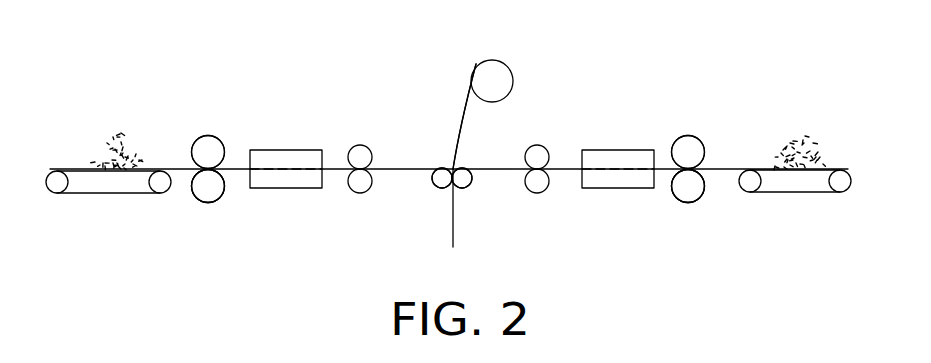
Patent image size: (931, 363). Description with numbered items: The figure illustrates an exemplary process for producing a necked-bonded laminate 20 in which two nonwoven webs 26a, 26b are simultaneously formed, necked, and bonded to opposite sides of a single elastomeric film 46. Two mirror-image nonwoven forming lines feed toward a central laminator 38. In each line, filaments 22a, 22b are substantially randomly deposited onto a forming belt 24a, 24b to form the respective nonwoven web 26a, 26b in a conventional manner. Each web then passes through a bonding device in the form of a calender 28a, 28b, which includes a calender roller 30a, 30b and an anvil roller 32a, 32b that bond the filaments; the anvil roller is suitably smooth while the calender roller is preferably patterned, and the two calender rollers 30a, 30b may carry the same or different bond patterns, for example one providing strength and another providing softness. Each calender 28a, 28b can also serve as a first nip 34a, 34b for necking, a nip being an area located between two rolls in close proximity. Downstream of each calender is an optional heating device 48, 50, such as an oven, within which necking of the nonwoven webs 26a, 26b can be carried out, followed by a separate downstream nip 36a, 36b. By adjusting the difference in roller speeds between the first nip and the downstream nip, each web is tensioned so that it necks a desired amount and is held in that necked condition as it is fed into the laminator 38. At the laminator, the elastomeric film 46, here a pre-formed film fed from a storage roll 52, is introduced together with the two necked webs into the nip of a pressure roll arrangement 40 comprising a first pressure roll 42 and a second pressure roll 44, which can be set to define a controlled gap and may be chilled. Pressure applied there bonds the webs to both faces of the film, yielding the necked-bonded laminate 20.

The necked-bonded laminate 20 is at (455, 222).
The filaments 22a is at (131, 136).
The filaments 22b is at (828, 127).
The forming belt 24a is at (108, 195).
The forming belt 24b is at (793, 193).
The nonwoven web 26a is at (182, 168).
The nonwoven web 26b is at (723, 167).
The calender 28a is at (231, 147).
The calender 28b is at (670, 137).
The calender roller 30a is at (208, 135).
The calender roller 30b is at (693, 133).
The anvil roller 32a is at (218, 200).
The anvil roller 32b is at (695, 200).
The first nip 34a is at (190, 204).
The first nip 34b is at (669, 199).
The downstream nip 36a is at (376, 149).
The downstream nip 36b is at (553, 159).
The laminator 38 is at (463, 157).
The pressure roll arrangement 40 is at (440, 198).
The first pressure roll 42 is at (435, 183).
The second pressure roll 44 is at (472, 180).
The elastomeric film 46 is at (462, 112).
The heating device 48 is at (303, 150).
The heating device 50 is at (618, 150).
The storage roll 52 is at (502, 77).